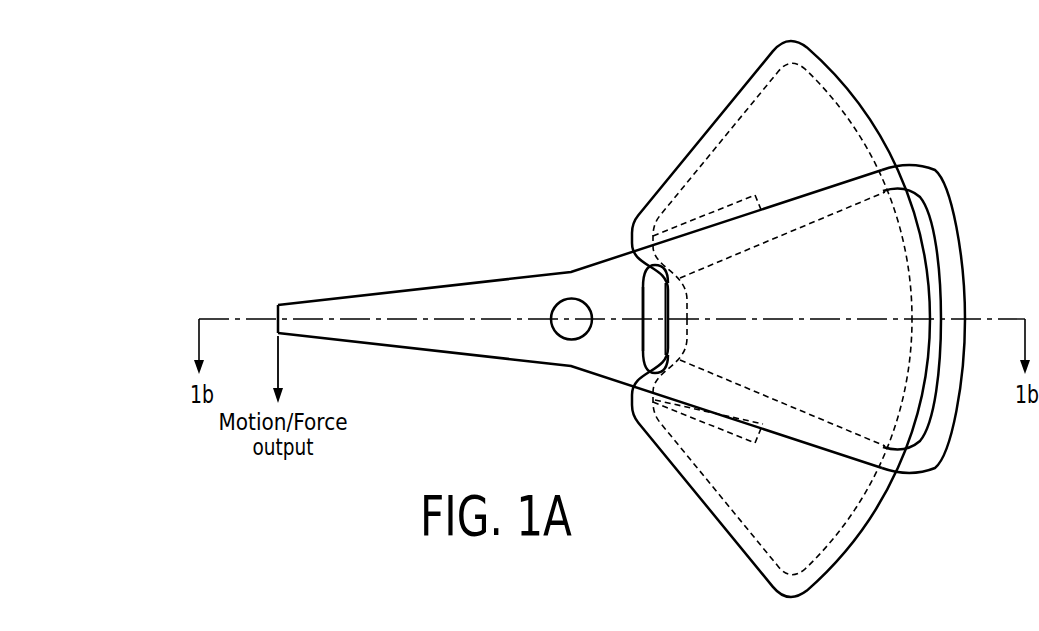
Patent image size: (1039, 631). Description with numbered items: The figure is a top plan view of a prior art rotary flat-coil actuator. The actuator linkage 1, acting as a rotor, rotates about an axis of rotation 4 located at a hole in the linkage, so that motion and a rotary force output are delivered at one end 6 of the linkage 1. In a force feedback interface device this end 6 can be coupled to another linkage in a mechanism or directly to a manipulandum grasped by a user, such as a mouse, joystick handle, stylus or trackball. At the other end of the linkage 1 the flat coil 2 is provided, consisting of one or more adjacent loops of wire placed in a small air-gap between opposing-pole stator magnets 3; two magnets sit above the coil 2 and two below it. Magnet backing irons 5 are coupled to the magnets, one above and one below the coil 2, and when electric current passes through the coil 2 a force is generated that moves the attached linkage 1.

The actuator linkage 1 is at (391, 290).
The flat coil 2 is at (955, 226).
The stator magnets 3 is at (855, 124).
The axis of rotation 4 is at (567, 290).
The magnet backing irons 5 is at (682, 157).
The end 6 is at (278, 289).